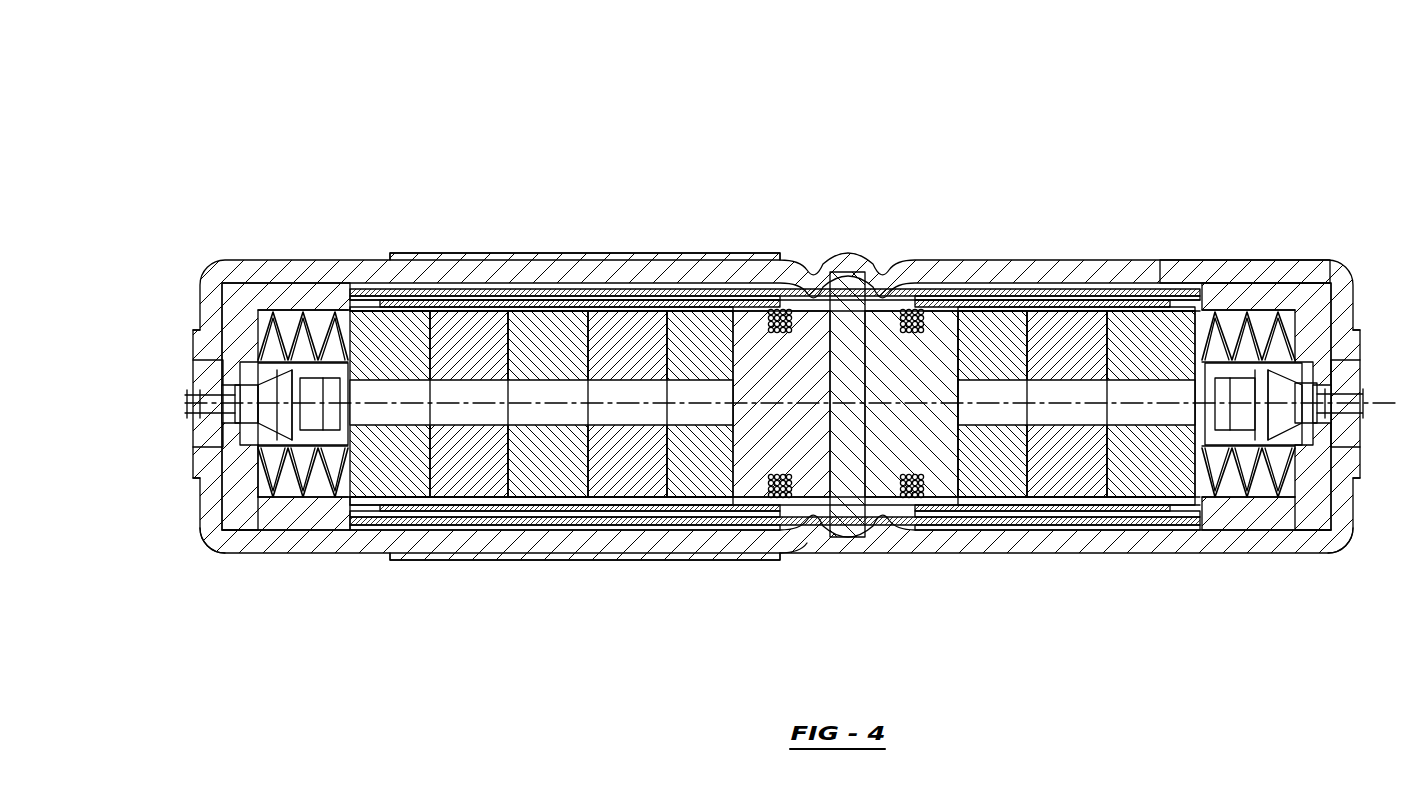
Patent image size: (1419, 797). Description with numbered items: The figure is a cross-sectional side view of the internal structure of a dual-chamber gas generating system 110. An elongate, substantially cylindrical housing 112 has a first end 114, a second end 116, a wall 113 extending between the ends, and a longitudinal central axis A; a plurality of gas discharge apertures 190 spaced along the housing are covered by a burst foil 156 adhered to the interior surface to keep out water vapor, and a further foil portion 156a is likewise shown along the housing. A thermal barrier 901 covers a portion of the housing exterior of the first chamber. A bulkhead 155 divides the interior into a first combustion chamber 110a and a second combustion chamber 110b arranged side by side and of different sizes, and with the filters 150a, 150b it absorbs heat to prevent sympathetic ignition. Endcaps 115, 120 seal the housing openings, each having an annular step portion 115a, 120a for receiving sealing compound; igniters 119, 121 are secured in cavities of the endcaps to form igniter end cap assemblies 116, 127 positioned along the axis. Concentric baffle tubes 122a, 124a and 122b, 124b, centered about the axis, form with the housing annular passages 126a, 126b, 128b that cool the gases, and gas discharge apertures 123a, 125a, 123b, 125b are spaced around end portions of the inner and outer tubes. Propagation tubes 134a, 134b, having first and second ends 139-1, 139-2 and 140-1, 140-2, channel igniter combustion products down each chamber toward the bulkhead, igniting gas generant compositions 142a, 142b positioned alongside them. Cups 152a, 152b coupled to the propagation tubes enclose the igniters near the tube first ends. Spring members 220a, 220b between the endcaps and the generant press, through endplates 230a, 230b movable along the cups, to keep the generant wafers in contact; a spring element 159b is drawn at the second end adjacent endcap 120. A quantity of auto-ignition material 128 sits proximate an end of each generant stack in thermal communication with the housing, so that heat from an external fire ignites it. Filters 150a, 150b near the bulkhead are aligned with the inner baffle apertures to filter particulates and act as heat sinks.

The gas generating system 110 is at (252, 716).
The first combustion chamber 110a is at (541, 377).
The second combustion chamber 110b is at (1073, 395).
The housing 112 is at (308, 258).
The wall 113 is at (1162, 262).
The first end 114 is at (220, 540).
The endcap 115 is at (197, 347).
The annular step portion 115a is at (263, 540).
The second end 116 is at (190, 470).
The first igniter 119 is at (267, 387).
The endcap 120 is at (1370, 262).
The annular step portion 120a is at (1325, 540).
The second igniter 121 is at (1300, 392).
The inner baffle tube 122a is at (598, 500).
The inner baffle tube 122b is at (1033, 497).
The gas discharge apertures 123a is at (782, 500).
The gas discharge apertures 123b is at (905, 520).
The outer baffle tube 124a is at (598, 520).
The outer baffle tube 124b is at (938, 520).
The gas discharge apertures 125a is at (478, 520).
The gas discharge apertures 125b is at (1100, 520).
The annular passage 126a is at (410, 262).
The annular passage 126b is at (1017, 262).
The igniter end cap assembly 127 is at (1345, 490).
The auto-ignition material 128 is at (345, 553).
The annular passage 128b is at (905, 535).
The propagation tube 134a is at (640, 378).
The propagation tube 134b is at (1055, 262).
The first end 139-1 is at (402, 420).
The second end 139-2 is at (628, 500).
The first end 140-1 is at (1152, 418).
The second end 140-2 is at (985, 418).
The gas generant composition 142a is at (535, 350).
The gas generant composition 142b is at (1052, 350).
The filter 150a is at (843, 293).
The filter 150b is at (900, 262).
The cup 152a is at (210, 543).
The cup 152b is at (1340, 510).
The bulkhead 155 is at (822, 290).
The foil 156 is at (983, 262).
The spacer 156a is at (608, 262).
The spring 159b is at (1325, 262).
The gas discharge apertures 190 is at (582, 262).
The spring members 220a is at (340, 262).
The spring members 220b is at (1247, 262).
The endplate 230a is at (365, 262).
The endplate 230b is at (1197, 262).
The thermal barrier 901 is at (755, 350).
The longitudinal central axis A is at (794, 428).